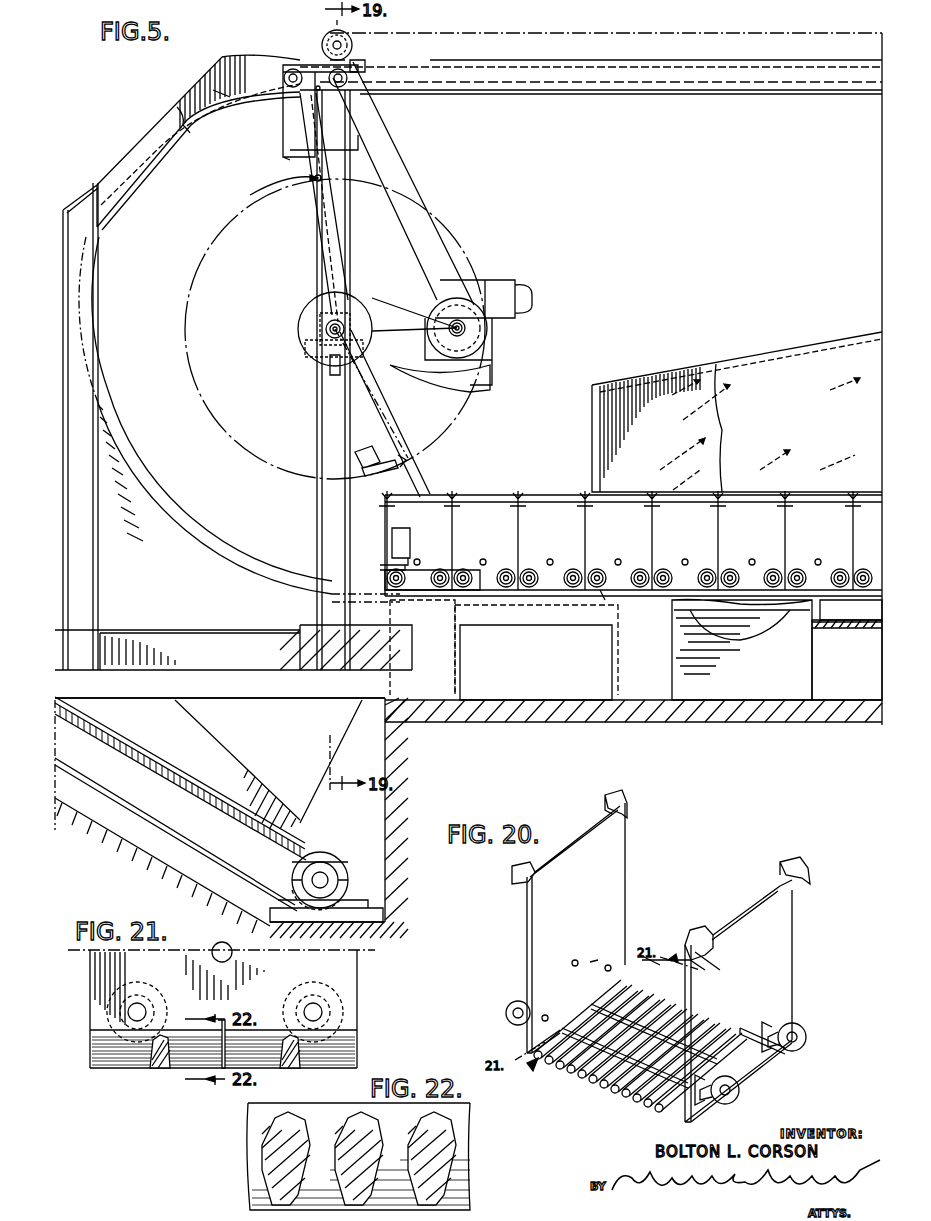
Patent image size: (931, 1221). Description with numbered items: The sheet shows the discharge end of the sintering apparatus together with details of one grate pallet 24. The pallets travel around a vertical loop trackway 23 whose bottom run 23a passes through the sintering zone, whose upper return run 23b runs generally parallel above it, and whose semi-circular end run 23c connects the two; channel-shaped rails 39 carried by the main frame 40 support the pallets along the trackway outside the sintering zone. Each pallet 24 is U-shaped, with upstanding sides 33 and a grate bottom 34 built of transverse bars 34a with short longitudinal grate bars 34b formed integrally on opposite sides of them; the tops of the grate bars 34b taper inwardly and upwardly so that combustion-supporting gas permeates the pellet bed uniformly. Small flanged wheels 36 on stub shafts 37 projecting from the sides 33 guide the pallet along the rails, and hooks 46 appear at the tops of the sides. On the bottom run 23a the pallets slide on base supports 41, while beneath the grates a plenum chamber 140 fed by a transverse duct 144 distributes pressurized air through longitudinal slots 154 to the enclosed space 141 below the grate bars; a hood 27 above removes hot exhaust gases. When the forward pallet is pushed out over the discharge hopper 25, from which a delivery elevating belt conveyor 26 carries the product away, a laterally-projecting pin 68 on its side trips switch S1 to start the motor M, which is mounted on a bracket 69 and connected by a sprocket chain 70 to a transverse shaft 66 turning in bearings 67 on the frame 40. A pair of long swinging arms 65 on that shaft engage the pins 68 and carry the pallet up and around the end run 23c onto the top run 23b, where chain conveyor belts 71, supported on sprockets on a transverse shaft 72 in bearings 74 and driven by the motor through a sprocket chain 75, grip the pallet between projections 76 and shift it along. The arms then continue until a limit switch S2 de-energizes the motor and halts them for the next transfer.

In FIG. 5, the chain conveyor belt 71 is at (535, 14).
In FIG. 5, the main frame 40 is at (598, 84).
In FIG. 5, the upper return run 23b is at (425, 80).
In FIG. 5, the semi-circular connecting end run 23c is at (128, 446).
In FIG. 5, the vertical loop trackway 23 is at (197, 535).
In FIG. 5, the bearings 74 is at (320, 48).
In FIG. 5, the transverse shaft 72 is at (320, 38).
In FIG. 5, the projections 76 is at (360, 66).
In FIG. 5, the channel-shaped rails 39 is at (258, 88).
In FIG. 5, the grate pallet 24 is at (297, 135).
In FIG. 20, the grate pallet 24 is at (792, 940).
In FIG. 21, the grate pallet 24 is at (386, 994).
In FIG. 5, the laterally-projecting pins 68 is at (320, 100).
In FIG. 20, the laterally-projecting pins 68 is at (760, 1040).
In FIG. 5, the swinging arms 65 is at (300, 178).
In FIG. 5, the transverse shaft 66 is at (328, 331).
In FIG. 5, the bearings 67 is at (308, 318).
In FIG. 5, the sprocket chain 75 is at (425, 175).
In FIG. 5, the sprocket chain 70 is at (375, 300).
In FIG. 5, the motor M is at (507, 318).
In FIG. 5, the bracket 69 is at (492, 375).
In FIG. 5, the limit switch S2 is at (367, 440).
In FIG. 5, the switch S1 is at (405, 528).
In FIG. 5, the tray hanger hook 46 is at (385, 492).
In FIG. 20, the tray hanger hook 46 is at (620, 790).
In FIG. 5, the flanged wheels 36 is at (400, 588).
In FIG. 20, the flanged wheels 36 is at (506, 1013).
In FIG. 21, the flanged wheels 36 is at (140, 975).
In FIG. 5, the bottom run 23a is at (555, 558).
In FIG. 5, the hood 27 is at (742, 358).
In FIG. 5, the base supports 41 is at (455, 650).
In FIG. 5, the transverse duct 144 is at (612, 668).
In FIG. 5, the longitudinal slots 154 is at (760, 605).
In FIG. 5, the plenum chamber 140 is at (828, 628).
In FIG. 5, the enclosed space 141 is at (850, 620).
In FIG. 5, the discharge hopper 25 is at (190, 648).
In FIG. 5, the delivery elevating belt conveyor 26 is at (170, 820).
In FIG. 20, the upstanding sides 33 is at (625, 876).
In FIG. 20, the grate bottom 34 is at (605, 1090).
In FIG. 20, the transverse bars 34a is at (600, 990).
In FIG. 21, the transverse bars 34a is at (150, 1070).
In FIG. 22, the transverse bars 34a is at (240, 1120).
In FIG. 20, the longitudinal grate bars 34b is at (555, 1055).
In FIG. 21, the longitudinal grate bars 34b is at (90, 1040).
In FIG. 22, the longitudinal grate bars 34b is at (315, 1128).
In FIG. 20, the stub shafts 37 is at (712, 1075).